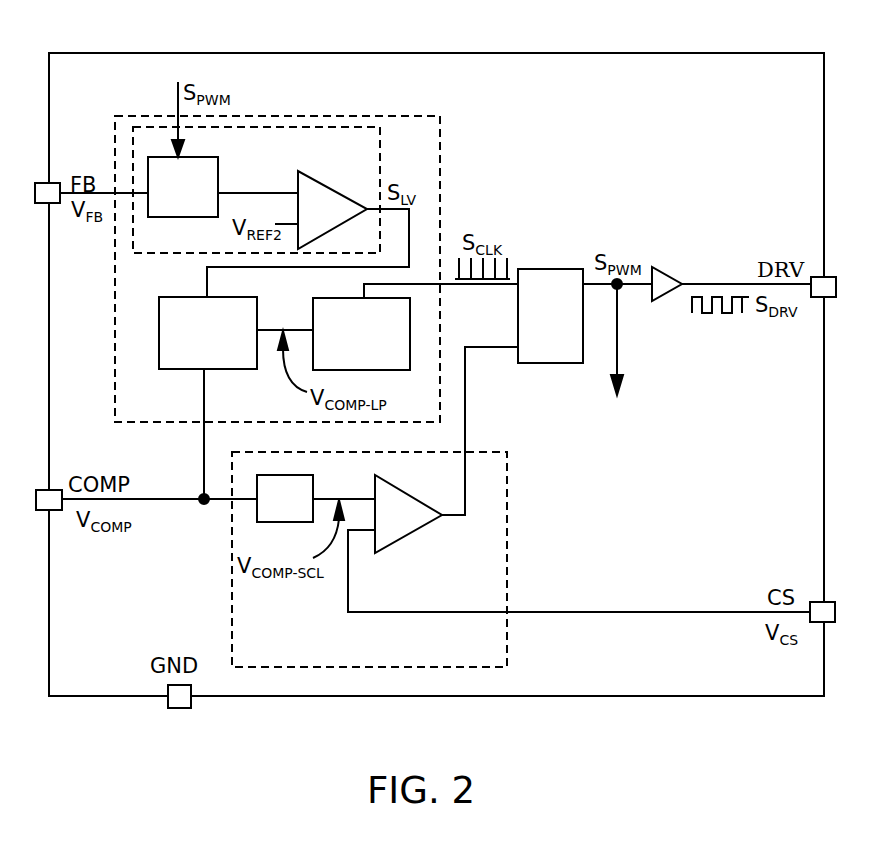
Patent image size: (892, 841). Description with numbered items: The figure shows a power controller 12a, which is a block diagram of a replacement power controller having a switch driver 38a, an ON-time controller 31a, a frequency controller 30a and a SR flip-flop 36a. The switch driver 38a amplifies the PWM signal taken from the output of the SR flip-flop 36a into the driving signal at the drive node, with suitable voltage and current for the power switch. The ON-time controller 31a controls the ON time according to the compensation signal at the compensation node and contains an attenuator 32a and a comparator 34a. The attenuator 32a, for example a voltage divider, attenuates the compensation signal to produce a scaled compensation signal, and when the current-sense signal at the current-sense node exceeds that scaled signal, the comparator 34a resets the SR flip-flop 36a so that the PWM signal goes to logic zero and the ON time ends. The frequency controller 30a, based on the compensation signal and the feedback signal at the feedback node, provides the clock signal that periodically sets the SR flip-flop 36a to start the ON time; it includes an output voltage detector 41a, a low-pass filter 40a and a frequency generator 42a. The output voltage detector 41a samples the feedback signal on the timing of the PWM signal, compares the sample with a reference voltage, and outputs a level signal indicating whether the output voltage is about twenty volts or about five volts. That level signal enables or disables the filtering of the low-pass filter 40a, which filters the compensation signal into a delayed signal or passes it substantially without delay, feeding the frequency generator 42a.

The power controller 12a is at (132, 53).
The frequency controller 30a is at (413, 116).
The output voltage detector 41a is at (256, 190).
The low-pass filter 40a is at (208, 333).
The frequency generator 42a is at (361, 334).
The SR flip-flop 36a is at (550, 316).
The switch driver 38a is at (660, 275).
The ON-time controller 31a is at (369, 559).
The attenuator 32a is at (285, 498).
The comparator 34a is at (406, 538).